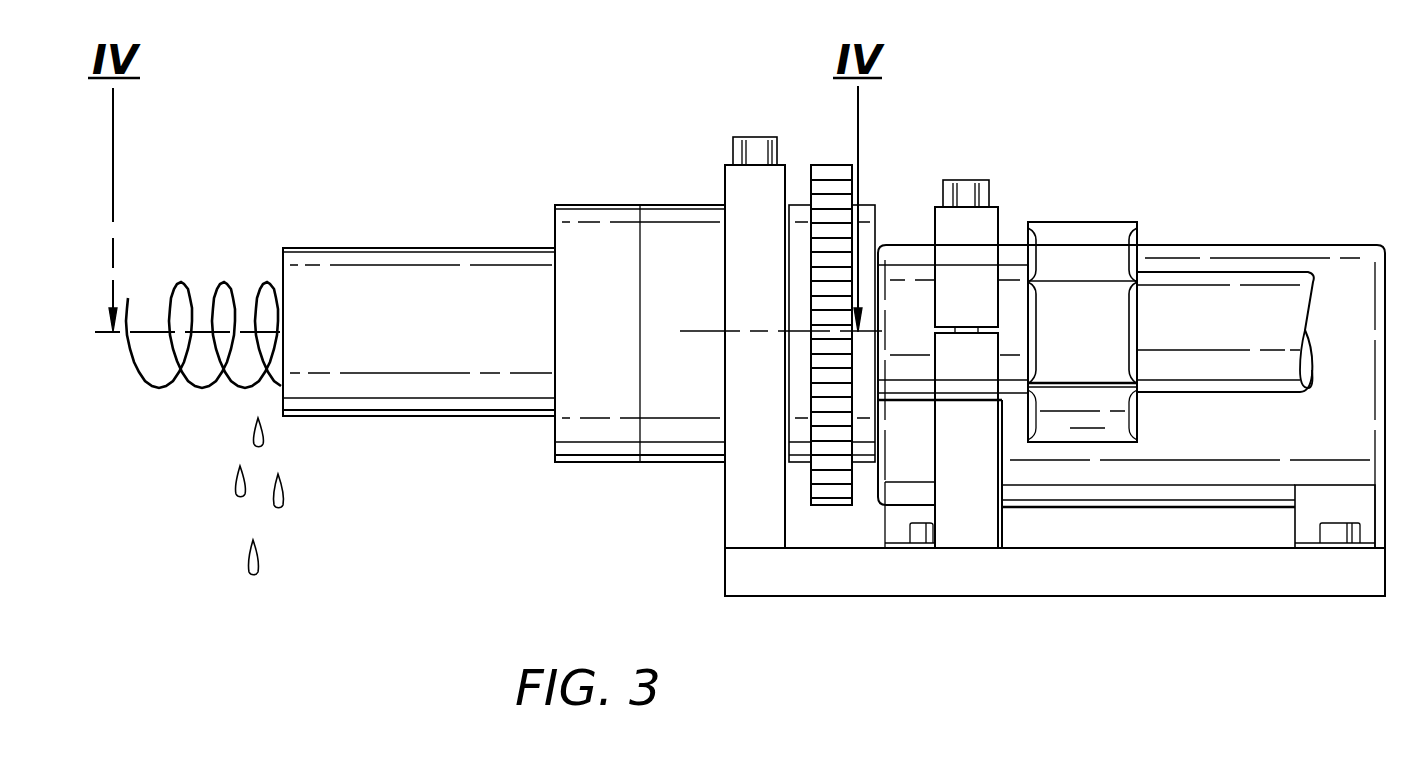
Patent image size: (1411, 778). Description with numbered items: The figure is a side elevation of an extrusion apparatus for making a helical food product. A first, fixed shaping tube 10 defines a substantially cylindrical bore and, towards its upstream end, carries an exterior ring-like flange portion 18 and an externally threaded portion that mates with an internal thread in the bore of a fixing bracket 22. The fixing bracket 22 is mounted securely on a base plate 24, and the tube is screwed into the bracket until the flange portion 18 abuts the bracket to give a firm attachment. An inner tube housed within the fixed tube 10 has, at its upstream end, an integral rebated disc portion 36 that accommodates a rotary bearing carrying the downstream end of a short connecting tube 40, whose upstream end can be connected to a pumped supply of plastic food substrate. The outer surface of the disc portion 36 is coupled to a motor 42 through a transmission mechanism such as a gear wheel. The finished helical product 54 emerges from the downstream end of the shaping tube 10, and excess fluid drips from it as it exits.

The fixed shaping tube 10 is at (407, 258).
The flange portion 18 is at (580, 430).
The fixing bracket 22 is at (745, 500).
The base plate 24 is at (1078, 578).
The disc portion 36 is at (801, 215).
The connecting tube 40 is at (1012, 368).
The motor 42 is at (1232, 444).
The helical food product 54 is at (192, 376).